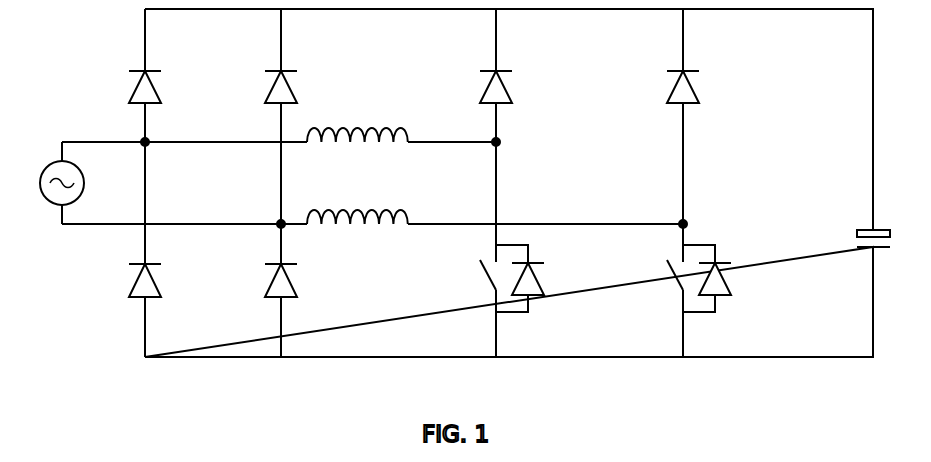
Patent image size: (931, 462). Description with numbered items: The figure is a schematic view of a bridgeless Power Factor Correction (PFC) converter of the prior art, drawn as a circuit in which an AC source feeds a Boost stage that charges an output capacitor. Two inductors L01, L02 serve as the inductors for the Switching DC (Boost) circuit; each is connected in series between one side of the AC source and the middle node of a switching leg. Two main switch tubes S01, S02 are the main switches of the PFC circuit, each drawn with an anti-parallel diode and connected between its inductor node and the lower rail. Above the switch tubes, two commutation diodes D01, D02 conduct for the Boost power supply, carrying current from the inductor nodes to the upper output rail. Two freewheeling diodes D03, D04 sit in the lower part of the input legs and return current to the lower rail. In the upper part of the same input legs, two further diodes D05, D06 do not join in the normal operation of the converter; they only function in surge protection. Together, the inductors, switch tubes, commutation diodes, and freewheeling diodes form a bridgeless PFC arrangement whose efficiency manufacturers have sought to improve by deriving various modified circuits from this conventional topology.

The commutation diode D01 is at (524, 88).
The commutation diode D02 is at (709, 88).
The freewheeling diode D03 is at (174, 280).
The freewheeling diode D04 is at (311, 280).
The surge protection diode D05 is at (170, 76).
The surge protection diode D06 is at (307, 76).
The inductor L01 is at (357, 119).
The inductor L02 is at (357, 201).
The main switch tube S01 is at (538, 278).
The main switch tube S02 is at (727, 278).